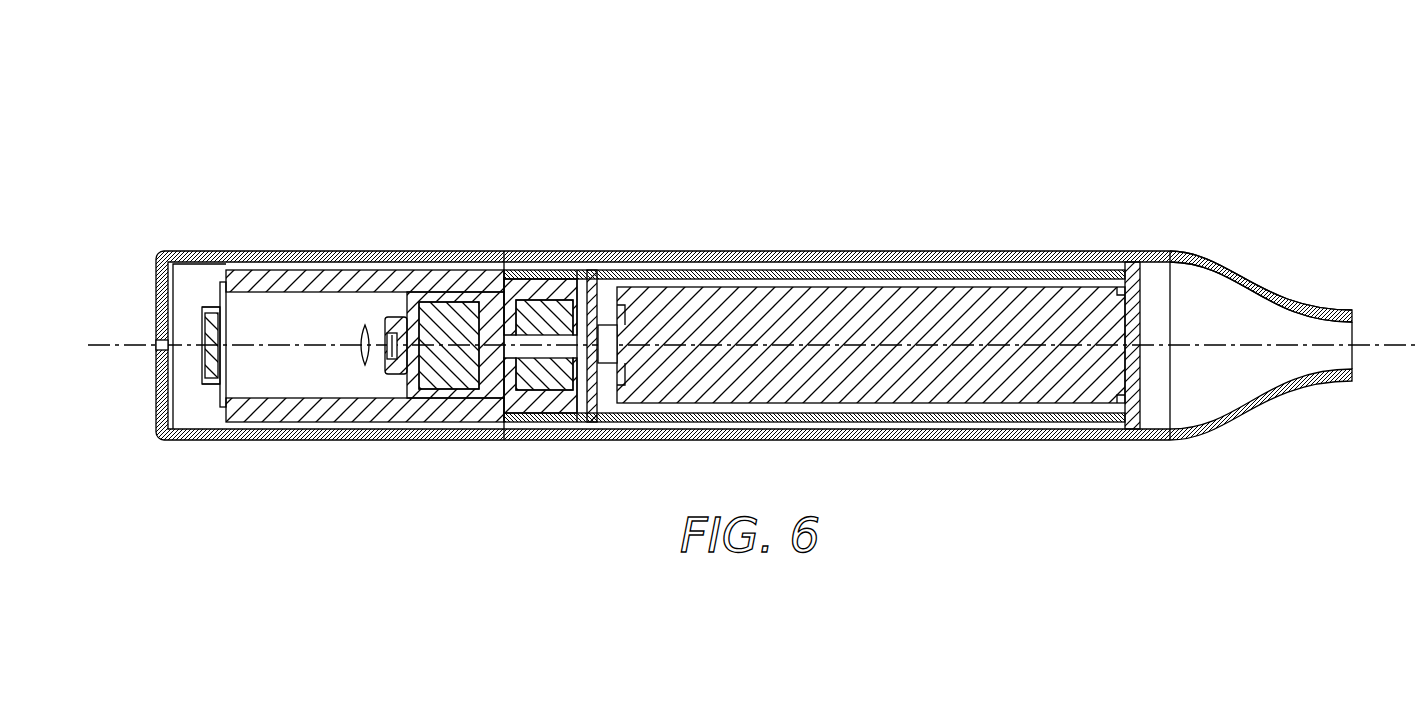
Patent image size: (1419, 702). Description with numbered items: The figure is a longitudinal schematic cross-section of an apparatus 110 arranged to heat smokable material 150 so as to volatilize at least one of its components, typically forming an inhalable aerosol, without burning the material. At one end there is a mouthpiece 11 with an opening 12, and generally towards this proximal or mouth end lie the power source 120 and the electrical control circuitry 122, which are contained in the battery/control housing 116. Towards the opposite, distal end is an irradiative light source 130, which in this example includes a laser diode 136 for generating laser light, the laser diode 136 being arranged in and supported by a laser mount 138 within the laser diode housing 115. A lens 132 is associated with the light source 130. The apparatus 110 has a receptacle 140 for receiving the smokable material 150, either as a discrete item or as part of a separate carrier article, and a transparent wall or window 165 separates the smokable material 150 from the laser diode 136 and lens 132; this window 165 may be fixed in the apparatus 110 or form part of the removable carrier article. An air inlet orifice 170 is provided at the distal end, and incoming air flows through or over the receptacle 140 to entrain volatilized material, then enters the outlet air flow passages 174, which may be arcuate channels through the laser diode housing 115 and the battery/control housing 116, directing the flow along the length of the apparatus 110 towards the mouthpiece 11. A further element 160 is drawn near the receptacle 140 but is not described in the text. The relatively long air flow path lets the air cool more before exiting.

The apparatus 110 is at (238, 126).
The mouthpiece 11 is at (1253, 290).
The mouthpiece outlet 12 is at (1357, 335).
The laser diode housing 115 is at (365, 268).
The battery/control housing 116 is at (690, 250).
The power source 120 is at (818, 296).
The electrical control circuitry 122 is at (547, 396).
The irradiative light source 130 is at (446, 312).
The lens 132 is at (358, 342).
The laser diode 136 is at (393, 376).
The laser mount 138 is at (458, 383).
The receptacle 140 is at (211, 395).
The smokable material 150 is at (202, 352).
The retainer 160 is at (205, 300).
The transparent wall or window 165 is at (224, 360).
The air inlet orifice 170 is at (157, 343).
The outlet air flow passages 174 is at (273, 258).